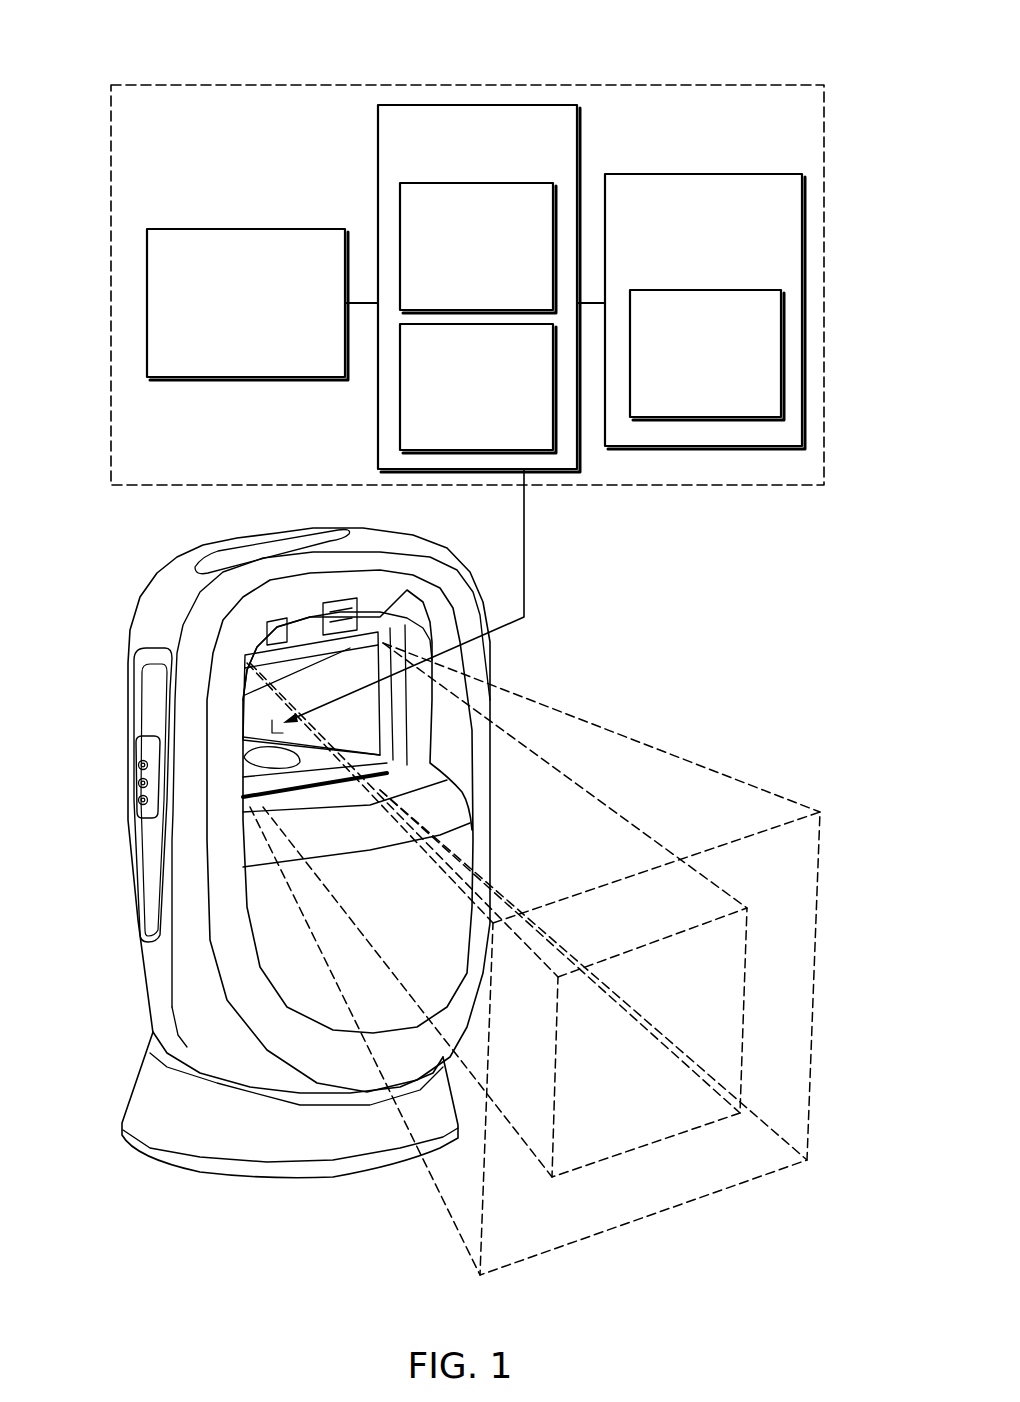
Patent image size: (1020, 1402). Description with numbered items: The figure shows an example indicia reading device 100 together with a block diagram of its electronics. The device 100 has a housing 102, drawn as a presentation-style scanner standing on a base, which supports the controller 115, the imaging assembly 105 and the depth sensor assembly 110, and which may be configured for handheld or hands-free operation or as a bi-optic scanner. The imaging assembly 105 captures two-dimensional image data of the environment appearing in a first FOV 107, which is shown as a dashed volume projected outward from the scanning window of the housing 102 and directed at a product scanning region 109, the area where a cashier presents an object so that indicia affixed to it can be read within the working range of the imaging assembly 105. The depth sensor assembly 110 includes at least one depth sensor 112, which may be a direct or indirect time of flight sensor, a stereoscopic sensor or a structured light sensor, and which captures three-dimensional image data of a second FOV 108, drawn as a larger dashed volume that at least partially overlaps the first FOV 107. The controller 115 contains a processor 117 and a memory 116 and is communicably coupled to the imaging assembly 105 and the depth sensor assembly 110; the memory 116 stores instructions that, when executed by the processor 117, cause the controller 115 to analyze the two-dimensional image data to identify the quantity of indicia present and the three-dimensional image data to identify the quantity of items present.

The indicia reading device 100 is at (130, 44).
The housing 102 is at (160, 560).
The imaging assembly 105 is at (220, 344).
The first FOV 107 is at (552, 1177).
The second FOV 108 is at (653, 748).
The product scanning region 109 is at (577, 1148).
The depth sensor assembly 110 is at (678, 278).
The depth sensor 112 is at (679, 394).
The controller 115 is at (450, 172).
The memory 116 is at (450, 278).
The processor 117 is at (450, 419).